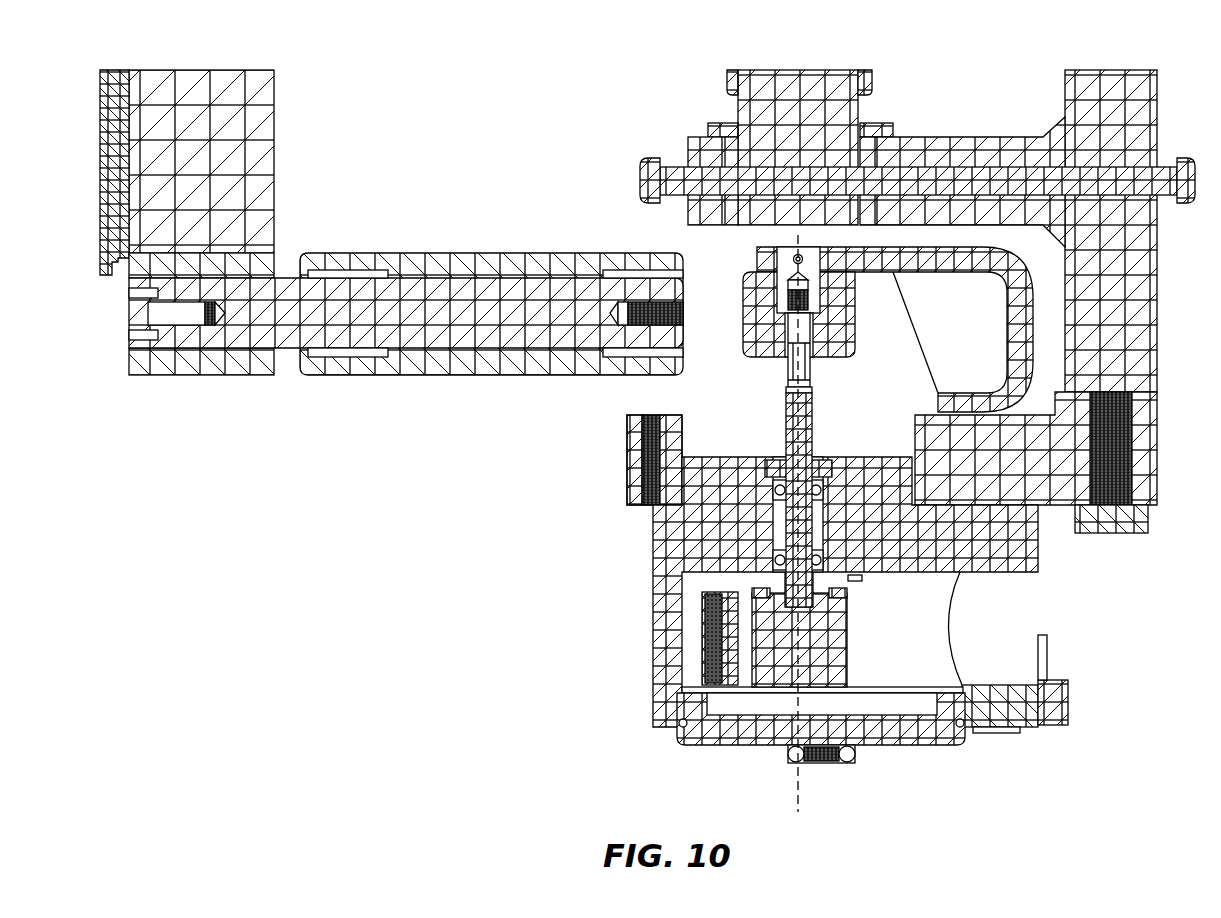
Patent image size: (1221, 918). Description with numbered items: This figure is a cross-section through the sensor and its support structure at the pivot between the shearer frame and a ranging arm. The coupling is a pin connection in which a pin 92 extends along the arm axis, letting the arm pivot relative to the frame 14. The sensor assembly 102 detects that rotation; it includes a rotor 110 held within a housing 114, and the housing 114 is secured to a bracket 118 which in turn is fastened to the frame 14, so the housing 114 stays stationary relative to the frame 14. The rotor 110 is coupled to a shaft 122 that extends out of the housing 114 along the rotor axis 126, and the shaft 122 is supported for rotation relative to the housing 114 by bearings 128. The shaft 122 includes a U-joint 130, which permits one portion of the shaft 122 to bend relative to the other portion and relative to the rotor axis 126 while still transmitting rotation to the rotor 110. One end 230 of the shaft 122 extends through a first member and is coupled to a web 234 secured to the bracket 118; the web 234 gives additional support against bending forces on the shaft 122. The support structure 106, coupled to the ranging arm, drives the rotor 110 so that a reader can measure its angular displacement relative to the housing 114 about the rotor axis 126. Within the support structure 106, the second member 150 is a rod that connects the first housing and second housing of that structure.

The frame 14 is at (1137, 263).
The pin 92 is at (837, 87).
The sensor assembly 102 is at (643, 678).
The support structure 106 is at (391, 285).
The rotor 110 is at (778, 657).
The housing 114 is at (830, 595).
The bracket 118 is at (1142, 478).
The shaft 122 is at (797, 517).
The rotor axis 126 is at (807, 800).
The bearings 128 is at (855, 580).
The U-joint 130 is at (818, 393).
The second member 150 is at (380, 431).
The end of the shaft 230 is at (792, 248).
The web 234 is at (930, 260).